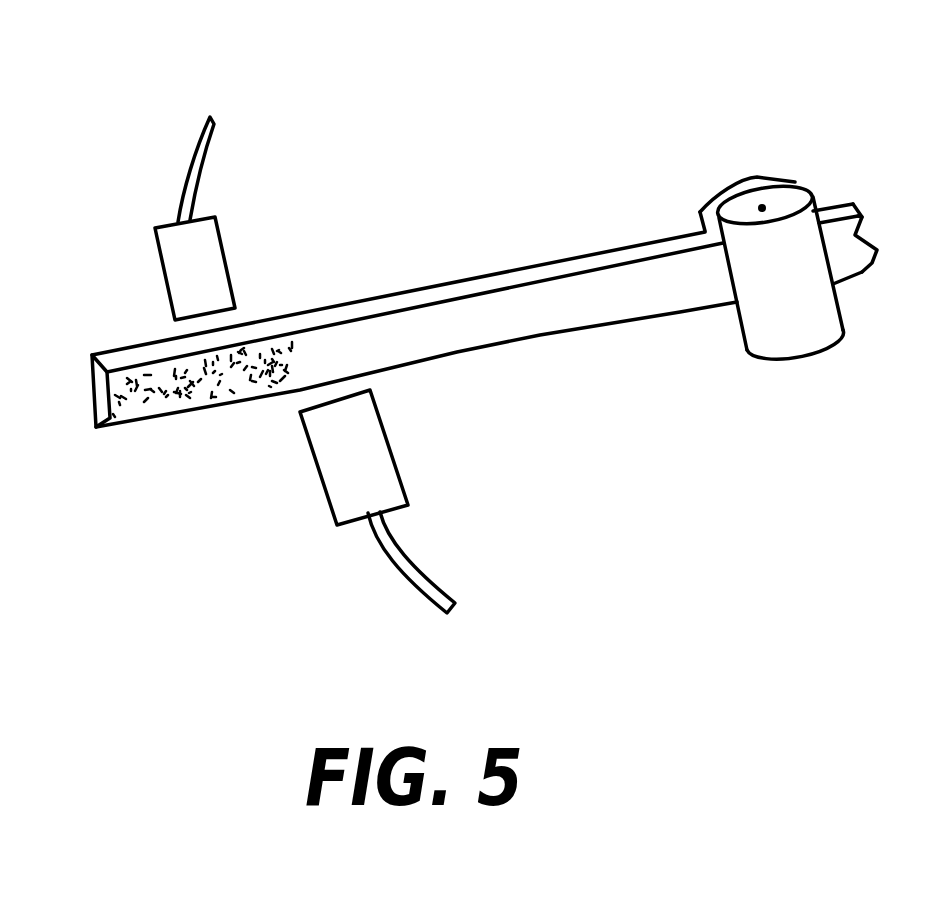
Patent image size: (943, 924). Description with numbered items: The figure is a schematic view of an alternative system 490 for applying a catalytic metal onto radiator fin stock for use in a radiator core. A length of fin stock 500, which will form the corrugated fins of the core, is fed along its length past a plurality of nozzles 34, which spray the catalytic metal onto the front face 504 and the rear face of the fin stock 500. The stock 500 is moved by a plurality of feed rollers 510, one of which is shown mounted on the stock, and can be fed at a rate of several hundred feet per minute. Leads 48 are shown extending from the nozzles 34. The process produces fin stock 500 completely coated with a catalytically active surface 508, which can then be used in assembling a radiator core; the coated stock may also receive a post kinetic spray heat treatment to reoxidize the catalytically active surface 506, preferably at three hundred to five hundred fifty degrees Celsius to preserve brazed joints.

The alternative system 490 is at (609, 104).
The fin stock 500 is at (673, 312).
The front face 504 is at (558, 305).
The catalytically active surface 506 is at (590, 252).
The catalytically active surface 508 is at (145, 403).
The feed rollers 510 is at (720, 187).
The nozzles 34 is at (227, 258).
The sensor lead wire 48 is at (208, 167).